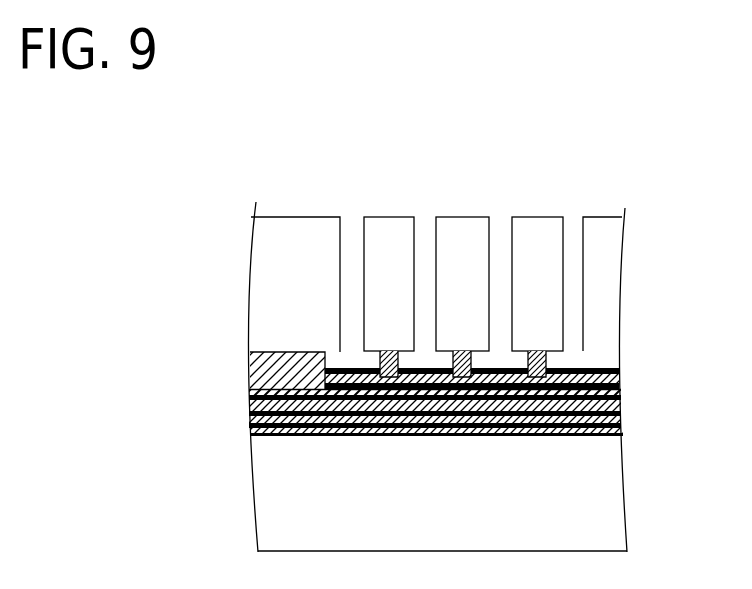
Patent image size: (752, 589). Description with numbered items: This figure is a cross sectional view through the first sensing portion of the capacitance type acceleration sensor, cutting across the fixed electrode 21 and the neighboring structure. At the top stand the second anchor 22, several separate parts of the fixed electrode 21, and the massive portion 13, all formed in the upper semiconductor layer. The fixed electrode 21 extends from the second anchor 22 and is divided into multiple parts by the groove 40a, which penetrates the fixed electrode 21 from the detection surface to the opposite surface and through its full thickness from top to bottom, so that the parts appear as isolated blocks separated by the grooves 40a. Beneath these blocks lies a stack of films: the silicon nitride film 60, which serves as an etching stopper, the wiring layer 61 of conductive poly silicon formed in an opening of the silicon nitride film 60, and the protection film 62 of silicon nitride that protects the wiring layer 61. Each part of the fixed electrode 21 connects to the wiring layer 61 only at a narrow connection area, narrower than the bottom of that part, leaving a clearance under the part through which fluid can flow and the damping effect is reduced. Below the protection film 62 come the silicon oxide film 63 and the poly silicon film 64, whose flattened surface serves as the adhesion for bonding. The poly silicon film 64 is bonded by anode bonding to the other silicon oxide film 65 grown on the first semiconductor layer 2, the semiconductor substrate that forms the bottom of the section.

The first semiconductor layer 2 is at (610, 518).
The massive portion 13 is at (604, 230).
The fixed electrode 21 is at (325, 230).
The second anchor 22 is at (280, 230).
The groove 40a is at (352, 227).
The silicon nitride film 60 is at (429, 371).
The wiring layer 61 is at (262, 365).
The protection film 62 is at (610, 385).
The silicon oxide film 63 is at (262, 405).
The poly silicon film 64 is at (610, 410).
The silicon oxide film 65 is at (610, 428).